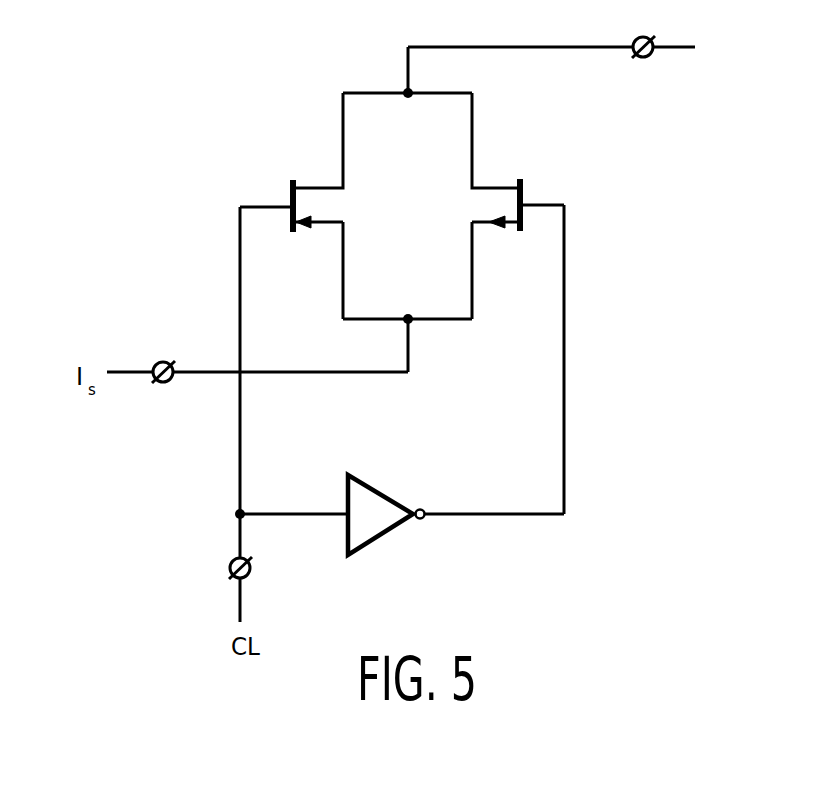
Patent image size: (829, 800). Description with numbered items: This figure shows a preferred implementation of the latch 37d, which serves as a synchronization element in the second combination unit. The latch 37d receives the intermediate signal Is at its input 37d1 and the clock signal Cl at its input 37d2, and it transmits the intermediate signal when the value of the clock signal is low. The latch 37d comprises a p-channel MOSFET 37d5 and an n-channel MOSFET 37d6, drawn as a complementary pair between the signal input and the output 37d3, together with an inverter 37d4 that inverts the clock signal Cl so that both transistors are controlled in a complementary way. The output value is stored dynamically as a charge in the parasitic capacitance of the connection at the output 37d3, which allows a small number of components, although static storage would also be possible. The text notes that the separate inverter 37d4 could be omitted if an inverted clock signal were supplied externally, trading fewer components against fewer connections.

The latch 37d is at (640, 409).
The input 37d1 is at (165, 384).
The input 37d2 is at (250, 572).
The output 37d3 is at (647, 57).
The inverter 37d4 is at (390, 495).
The p-channel MOSFET 37d5 is at (305, 203).
The n-channel MOSFET 37d6 is at (508, 207).